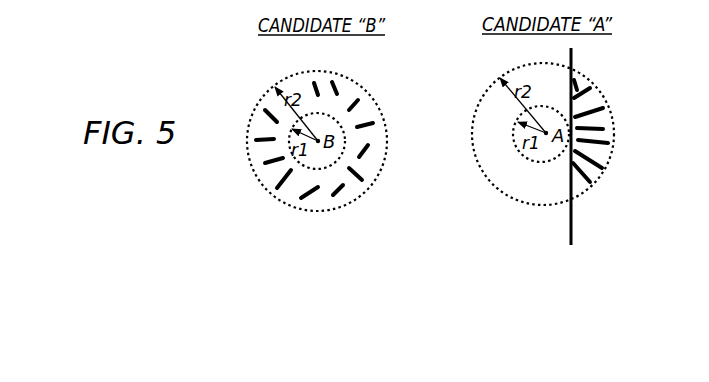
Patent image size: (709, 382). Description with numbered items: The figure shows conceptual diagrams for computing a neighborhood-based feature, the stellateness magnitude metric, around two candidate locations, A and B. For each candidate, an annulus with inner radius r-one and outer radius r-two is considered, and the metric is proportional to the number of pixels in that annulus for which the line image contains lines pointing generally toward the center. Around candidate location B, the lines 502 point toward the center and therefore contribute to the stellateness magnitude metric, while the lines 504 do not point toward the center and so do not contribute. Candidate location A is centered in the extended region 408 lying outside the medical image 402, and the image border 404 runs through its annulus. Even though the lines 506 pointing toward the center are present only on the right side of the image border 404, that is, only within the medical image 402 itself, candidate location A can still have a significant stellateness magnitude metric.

The lines 502 is at (360, 107).
The lines 504 is at (346, 191).
The lines 506 is at (591, 92).
The image border 404 is at (573, 60).
The extended region 408 is at (560, 231).
The medical image 402 is at (618, 231).